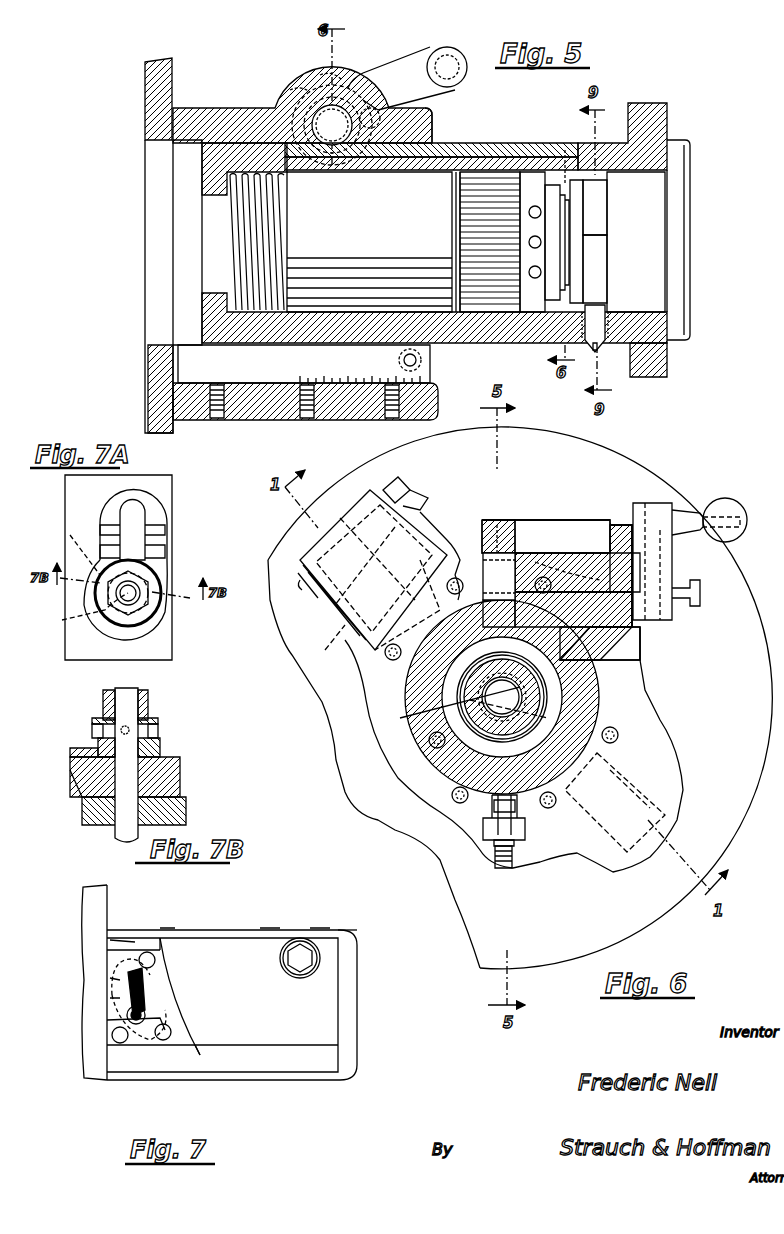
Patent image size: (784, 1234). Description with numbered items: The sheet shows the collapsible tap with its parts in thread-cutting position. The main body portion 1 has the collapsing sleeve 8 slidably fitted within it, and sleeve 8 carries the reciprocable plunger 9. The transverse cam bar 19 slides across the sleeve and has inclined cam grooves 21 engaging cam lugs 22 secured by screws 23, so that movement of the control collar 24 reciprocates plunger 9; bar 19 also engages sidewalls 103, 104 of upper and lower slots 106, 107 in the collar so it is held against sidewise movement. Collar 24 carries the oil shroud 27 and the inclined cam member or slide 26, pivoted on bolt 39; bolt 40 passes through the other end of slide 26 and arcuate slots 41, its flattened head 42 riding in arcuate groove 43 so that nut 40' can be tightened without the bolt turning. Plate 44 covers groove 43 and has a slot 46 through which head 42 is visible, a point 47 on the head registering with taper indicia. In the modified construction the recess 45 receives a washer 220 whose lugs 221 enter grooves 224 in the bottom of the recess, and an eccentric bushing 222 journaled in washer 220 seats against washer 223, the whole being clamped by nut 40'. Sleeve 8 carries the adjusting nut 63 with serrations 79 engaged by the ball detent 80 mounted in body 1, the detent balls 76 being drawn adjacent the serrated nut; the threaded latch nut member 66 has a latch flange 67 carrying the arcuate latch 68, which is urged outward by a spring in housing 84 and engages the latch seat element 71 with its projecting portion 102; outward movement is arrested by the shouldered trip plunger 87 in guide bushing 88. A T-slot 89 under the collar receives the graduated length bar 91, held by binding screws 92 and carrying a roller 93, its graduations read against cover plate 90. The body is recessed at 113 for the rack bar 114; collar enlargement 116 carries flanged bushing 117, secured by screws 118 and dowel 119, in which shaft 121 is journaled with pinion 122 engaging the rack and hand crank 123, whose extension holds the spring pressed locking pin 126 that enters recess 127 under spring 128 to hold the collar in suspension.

In FIG. 5, the main body portion 1 is at (210, 158).
In FIG. 6, the main body portion 1 is at (630, 660).
In FIG. 5, the collapsing sleeve 8 is at (321, 211).
In FIG. 5, the reciprocable plunger 9 is at (222, 233).
In FIG. 6, the transverse cam bar 19 is at (470, 690).
In FIG. 6, the inclined cam grooves 21 is at (502, 697).
In FIG. 6, the cam lugs 22 is at (502, 697).
In FIG. 6, the screws 23 is at (580, 697).
In FIG. 5, the control collar 24 is at (210, 110).
In FIG. 6, the control collar 24 is at (513, 520).
In FIG. 7A, the control collar 24 is at (165, 493).
In FIG. 7B, the control collar 24 is at (182, 770).
In FIG. 7, the control collar 24 is at (327, 990).
In FIG. 7B, the inclined cam member or slide 26 is at (188, 806).
In FIG. 5, the oil shroud 27 is at (173, 70).
In FIG. 6, the oil shroud 27 is at (595, 448).
In FIG. 7, the oil shroud 27 is at (100, 903).
In FIG. 6, the bolt 39 is at (390, 486).
In FIG. 7, the bolt 39 is at (298, 968).
In FIG. 6, the bolt 40 is at (382, 570).
In FIG. 7A, the bolt 40 is at (150, 596).
In FIG. 7B, the bolt 40 is at (146, 759).
In FIG. 7A, the nut 40' is at (155, 589).
In FIG. 7B, the nut 40' is at (105, 705).
In FIG. 7, the arcuate slots 41 is at (122, 988).
In FIG. 6, the flattened head 42 is at (328, 640).
In FIG. 7, the flattened head 42 is at (136, 1008).
In FIG. 7, the arcuate groove 43 is at (110, 955).
In FIG. 6, the plate 44 is at (312, 600).
In FIG. 7, the plate 44 is at (158, 1015).
In FIG. 6, the recess 45 is at (427, 522).
In FIG. 7B, the recess 45 is at (100, 770).
In FIG. 7, the slot 46 is at (140, 978).
In FIG. 7, the point 47 is at (142, 1018).
In FIG. 5, the adjusting nut 63 is at (552, 314).
In FIG. 6, the adjusting nut 63 is at (510, 641).
In FIG. 6, the threaded latch nut member 66 is at (449, 705).
In FIG. 5, the latch flange 67 is at (584, 245).
In FIG. 5, the arcuate latch 68 is at (605, 285).
In FIG. 5, the latch seat element 71 is at (648, 196).
In FIG. 5, the balls 76 is at (530, 222).
In FIG. 5, the serrations 79 is at (470, 272).
In FIG. 5, the ball detent 80 is at (528, 316).
In FIG. 5, the housing 84 is at (603, 210).
In FIG. 5, the shouldered trip plunger 87 is at (598, 350).
In FIG. 5, the guide bushing 88 is at (607, 312).
In FIG. 6, the T-slot 89 is at (518, 818).
In FIG. 5, the cover plate 90 is at (433, 126).
In FIG. 7, the cover plate 90 is at (350, 952).
In FIG. 5, the graduated length bar 91 is at (298, 370).
In FIG. 6, the graduated length bar 91 is at (520, 835).
In FIG. 5, the binding screws 92 is at (392, 420).
In FIG. 6, the binding screws 92 is at (512, 866).
In FIG. 5, the roller 93 is at (422, 355).
In FIG. 6, the roller 93 is at (490, 825).
In FIG. 5, the projecting portion 102 is at (690, 148).
In FIG. 6, the sidewall 103 is at (407, 605).
In FIG. 6, the sidewall 104 is at (598, 768).
In FIG. 6, the upper slot 106 is at (394, 664).
In FIG. 6, the lower slot 107 is at (615, 780).
In FIG. 5, the recess 113 is at (595, 140).
In FIG. 6, the recess 113 is at (499, 576).
In FIG. 5, the rack bar 114 is at (495, 143).
In FIG. 6, the rack bar 114 is at (466, 583).
In FIG. 6, the enlargement 116 is at (582, 520).
In FIG. 6, the flanged bushing 117 is at (614, 525).
In FIG. 5, the screws 118 is at (330, 70).
In FIG. 5, the dowel 119 is at (318, 92).
In FIG. 6, the shaft 121 is at (590, 581).
In FIG. 5, the pinion 122 is at (375, 95).
In FIG. 6, the pinion 122 is at (497, 525).
In FIG. 5, the hand crank 123 is at (452, 52).
In FIG. 6, the hand crank 123 is at (688, 510).
In FIG. 6, the spring pressed locking pin 126 is at (695, 590).
In FIG. 5, the recess 127 is at (372, 70).
In FIG. 6, the spring 128 is at (665, 620).
In FIG. 7B, the washer 220 is at (98, 744).
In FIG. 7A, the lugs 221 is at (79, 577).
In FIG. 7B, the lugs 221 is at (75, 790).
In FIG. 7B, the eccentric bushing 222 is at (162, 740).
In FIG. 7B, the washer 223 is at (158, 720).
In FIG. 7A, the slots or grooves 224 is at (100, 550).
In FIG. 7B, the slots or grooves 224 is at (72, 752).